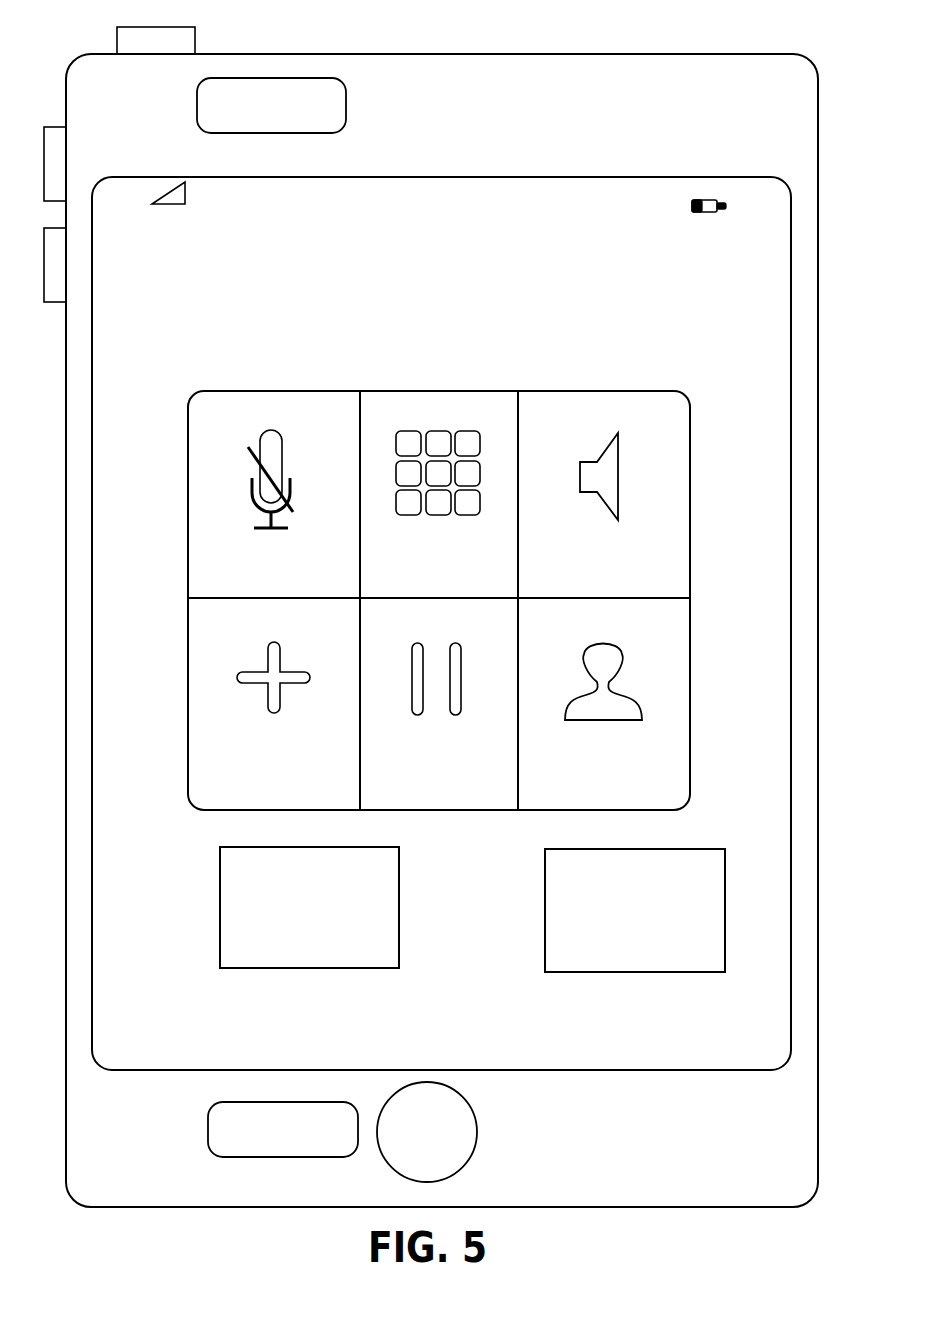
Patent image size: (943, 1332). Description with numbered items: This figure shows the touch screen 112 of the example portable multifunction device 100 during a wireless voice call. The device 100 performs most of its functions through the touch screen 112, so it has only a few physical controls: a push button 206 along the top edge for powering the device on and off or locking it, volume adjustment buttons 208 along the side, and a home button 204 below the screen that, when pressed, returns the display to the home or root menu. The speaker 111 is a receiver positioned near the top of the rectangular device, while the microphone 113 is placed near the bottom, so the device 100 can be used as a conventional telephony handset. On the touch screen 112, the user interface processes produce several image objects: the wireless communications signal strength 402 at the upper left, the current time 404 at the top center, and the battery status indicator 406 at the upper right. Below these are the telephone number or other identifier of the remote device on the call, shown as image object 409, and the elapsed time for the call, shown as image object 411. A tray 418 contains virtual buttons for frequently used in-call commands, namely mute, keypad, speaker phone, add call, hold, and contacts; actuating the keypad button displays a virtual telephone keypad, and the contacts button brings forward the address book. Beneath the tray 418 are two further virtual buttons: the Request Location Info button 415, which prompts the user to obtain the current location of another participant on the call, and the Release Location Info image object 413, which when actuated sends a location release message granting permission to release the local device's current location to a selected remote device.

The portable multifunction device 100 is at (645, 54).
The push button 206 is at (174, 48).
The volume adjustment button 208 is at (64, 148).
The speaker 111 is at (287, 125).
The touch screen 112 is at (767, 1052).
The microphone 113 is at (300, 1150).
The home button 204 is at (442, 1150).
The wireless communications signal strength 402 is at (193, 192).
The current time 404 is at (540, 202).
The battery status indicator 406 is at (738, 203).
The telephone number image object 409 is at (552, 265).
The elapsed time image object 411 is at (390, 297).
The tray 418 is at (572, 392).
The Request Location Info button 415 is at (220, 933).
The Release Location Info image object 413 is at (545, 935).